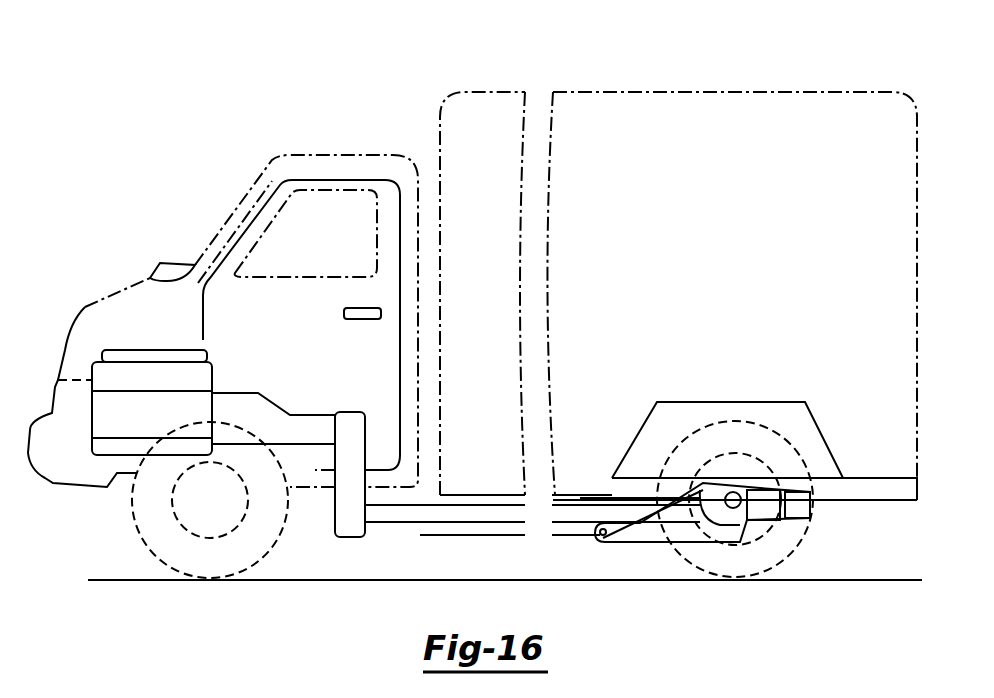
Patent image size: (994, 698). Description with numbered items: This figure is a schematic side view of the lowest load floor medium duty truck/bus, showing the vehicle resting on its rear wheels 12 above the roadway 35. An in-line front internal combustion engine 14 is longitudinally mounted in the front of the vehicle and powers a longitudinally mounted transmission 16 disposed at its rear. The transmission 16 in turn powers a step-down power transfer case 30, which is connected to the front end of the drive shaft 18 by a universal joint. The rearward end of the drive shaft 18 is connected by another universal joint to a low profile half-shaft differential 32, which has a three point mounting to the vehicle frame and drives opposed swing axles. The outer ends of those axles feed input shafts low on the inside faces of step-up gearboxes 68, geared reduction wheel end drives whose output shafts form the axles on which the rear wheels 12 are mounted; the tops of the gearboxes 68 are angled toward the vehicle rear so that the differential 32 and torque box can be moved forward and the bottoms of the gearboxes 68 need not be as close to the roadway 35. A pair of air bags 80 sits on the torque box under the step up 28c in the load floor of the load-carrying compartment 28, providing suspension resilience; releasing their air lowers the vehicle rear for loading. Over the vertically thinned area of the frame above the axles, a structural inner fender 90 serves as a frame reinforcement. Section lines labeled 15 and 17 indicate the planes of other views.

The rear wheels 12 is at (760, 565).
The internal combustion engine 14 is at (140, 403).
The section line 15- 15 is at (745, 416).
The transmission 16 is at (258, 413).
The section line 17- 17 is at (769, 402).
The drive shaft 18 is at (395, 530).
The load-carrying compartment 28 is at (657, 92).
The step up in the load floor 28c is at (882, 476).
The step-down power transfer case 30 is at (355, 427).
The half-shaft differential 32 is at (700, 462).
The roadway 35 is at (290, 583).
The step-up gearboxes 68 is at (662, 402).
The air bags 80 is at (812, 520).
The structural inner fender 90 is at (617, 470).